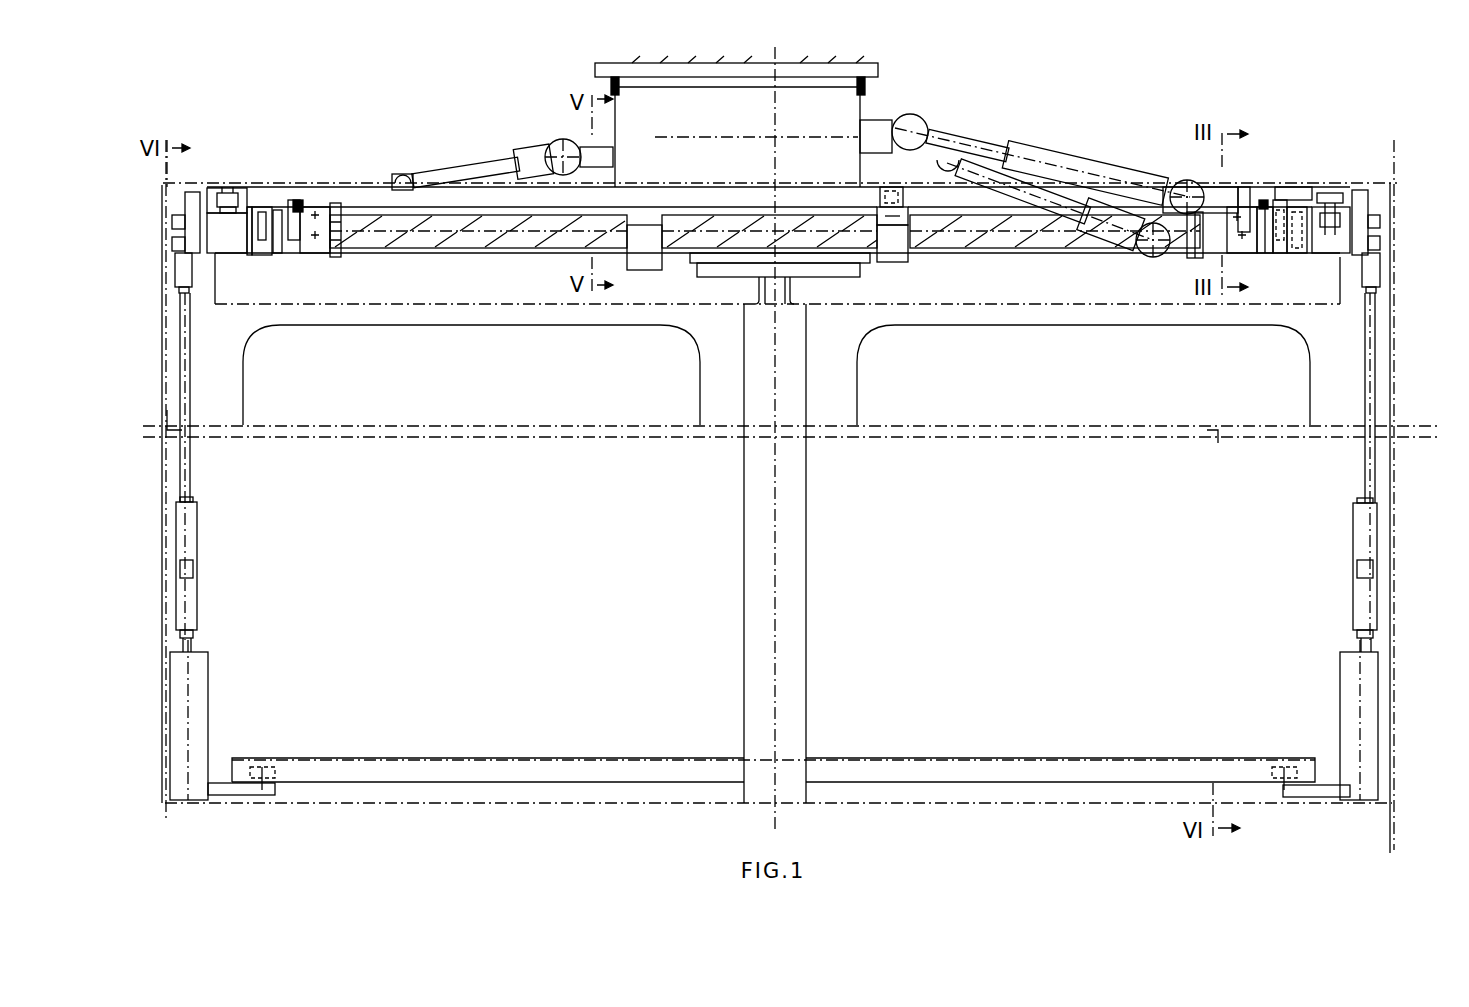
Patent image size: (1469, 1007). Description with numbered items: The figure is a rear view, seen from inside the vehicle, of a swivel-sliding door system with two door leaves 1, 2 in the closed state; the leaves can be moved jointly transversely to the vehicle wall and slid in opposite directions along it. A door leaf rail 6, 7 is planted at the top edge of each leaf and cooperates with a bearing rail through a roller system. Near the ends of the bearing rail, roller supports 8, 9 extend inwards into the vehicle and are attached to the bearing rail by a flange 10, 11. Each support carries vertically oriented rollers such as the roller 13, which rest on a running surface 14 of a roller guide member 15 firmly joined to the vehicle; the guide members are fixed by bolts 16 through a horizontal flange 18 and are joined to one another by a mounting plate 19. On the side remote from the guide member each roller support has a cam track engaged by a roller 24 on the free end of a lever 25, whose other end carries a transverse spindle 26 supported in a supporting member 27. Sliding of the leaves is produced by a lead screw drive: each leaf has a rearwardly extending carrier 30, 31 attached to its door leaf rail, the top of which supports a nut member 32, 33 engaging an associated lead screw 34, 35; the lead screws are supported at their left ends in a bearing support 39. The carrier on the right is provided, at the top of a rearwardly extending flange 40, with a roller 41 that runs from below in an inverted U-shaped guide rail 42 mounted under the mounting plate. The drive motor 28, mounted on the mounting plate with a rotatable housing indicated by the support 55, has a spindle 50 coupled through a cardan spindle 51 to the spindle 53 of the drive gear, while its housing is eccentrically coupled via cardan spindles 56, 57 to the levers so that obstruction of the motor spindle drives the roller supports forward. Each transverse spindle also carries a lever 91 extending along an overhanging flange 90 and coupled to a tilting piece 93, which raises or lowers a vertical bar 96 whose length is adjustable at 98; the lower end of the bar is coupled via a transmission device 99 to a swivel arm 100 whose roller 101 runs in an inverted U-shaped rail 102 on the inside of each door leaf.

The door leaf 1 is at (423, 553).
The door leaf 2 is at (1021, 578).
The door leaf rail 6 is at (1055, 252).
The door leaf rail 7 is at (453, 288).
The roller support 8 is at (1293, 205).
The roller support 9 is at (277, 246).
The flange 10 is at (1243, 240).
The flange 11 is at (307, 250).
The roller 13 is at (262, 213).
The running surface 14 is at (1292, 242).
The roller guide member 15 is at (246, 248).
The bolt 16 is at (228, 190).
The horizontal flange 18 is at (212, 207).
The mounting plate 19 is at (965, 182).
The roller 24 is at (298, 203).
The lever 25 is at (308, 210).
The transverse spindle 26 is at (1274, 196).
The supporting member 27 is at (1297, 186).
The drive motor 28 is at (716, 125).
The carrier 30 is at (682, 266).
The carrier 31 is at (877, 258).
The nut member 32 is at (650, 252).
The nut member 33 is at (890, 253).
The lead screw 34 is at (972, 240).
The lead screw 35 is at (1022, 228).
The bearing support 39 is at (335, 256).
The rearwardly extending flange 40 is at (908, 207).
The roller 41 is at (893, 197).
The guide rail 42 is at (485, 203).
The spindle 50 is at (866, 130).
The cardan spindle 51 is at (1015, 177).
The spindle 53 is at (1193, 243).
The support of the motor housing 55 is at (612, 85).
The cardan spindle 56 is at (1063, 173).
The cardan spindle 57 is at (505, 178).
The overhanging flange 90 is at (197, 242).
The lever 91 is at (193, 192).
The tilting piece 93 is at (190, 233).
The vertical bar 96 is at (180, 382).
The length adjustment 98 is at (166, 276).
The transmission device 99 is at (205, 677).
The swivel arm 100 is at (232, 792).
The roller 101 is at (262, 778).
The rail 102 is at (420, 758).